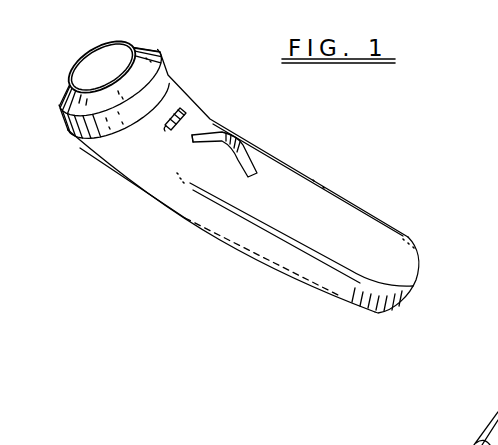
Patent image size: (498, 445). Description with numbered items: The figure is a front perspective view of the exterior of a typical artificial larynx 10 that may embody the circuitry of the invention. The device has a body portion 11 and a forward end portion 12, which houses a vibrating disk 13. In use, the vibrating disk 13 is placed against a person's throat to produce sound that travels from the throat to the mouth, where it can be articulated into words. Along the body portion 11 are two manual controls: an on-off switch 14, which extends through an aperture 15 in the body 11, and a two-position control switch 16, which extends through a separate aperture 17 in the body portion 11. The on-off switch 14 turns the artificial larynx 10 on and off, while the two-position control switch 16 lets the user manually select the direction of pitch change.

The artificial larynx 10 is at (284, 119).
The body portion 11 is at (375, 205).
The forward end portion 12 is at (179, 57).
The vibrating disk 13 is at (93, 64).
The on-off switch 14 is at (189, 107).
The aperture 15 is at (166, 127).
The two-position control switch 16 is at (245, 163).
The aperture 17 is at (248, 177).